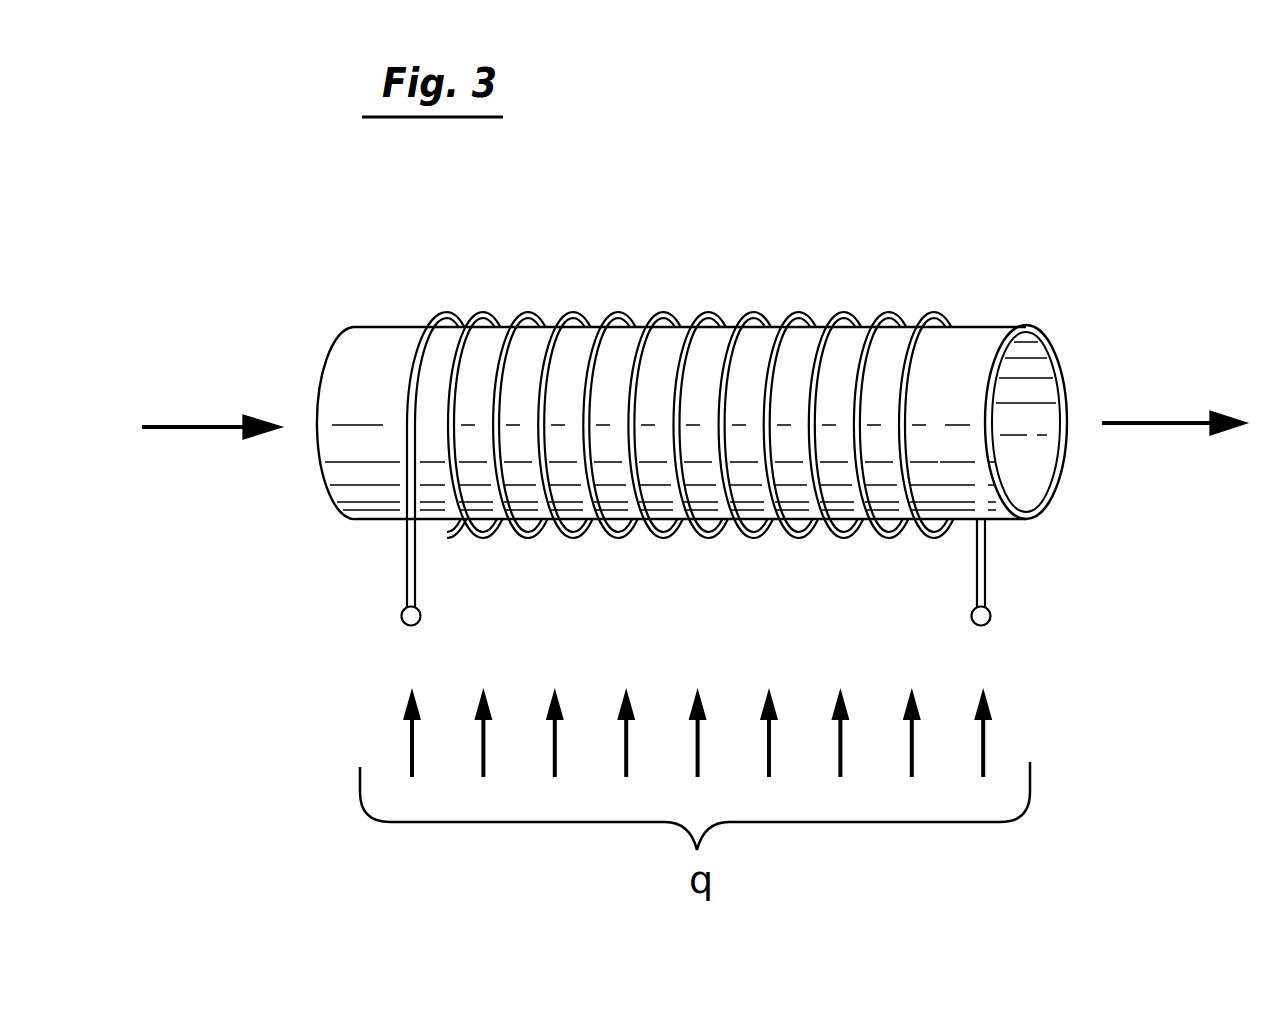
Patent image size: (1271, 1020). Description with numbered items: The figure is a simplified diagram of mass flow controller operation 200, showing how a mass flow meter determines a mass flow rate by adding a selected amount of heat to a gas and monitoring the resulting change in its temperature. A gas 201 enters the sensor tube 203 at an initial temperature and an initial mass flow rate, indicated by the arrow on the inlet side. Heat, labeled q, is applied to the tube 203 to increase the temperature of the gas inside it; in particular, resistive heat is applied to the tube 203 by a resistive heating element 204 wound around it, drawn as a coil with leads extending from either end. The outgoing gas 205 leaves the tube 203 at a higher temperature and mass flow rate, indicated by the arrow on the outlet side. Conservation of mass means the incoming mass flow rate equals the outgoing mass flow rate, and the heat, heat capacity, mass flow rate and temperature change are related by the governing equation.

The mass flow controller operation 200 is at (907, 213).
The gas 201 is at (192, 425).
The sensor tube 203 is at (990, 327).
The resistive heating element 204 is at (670, 313).
The outgoing gas 205 is at (1160, 423).